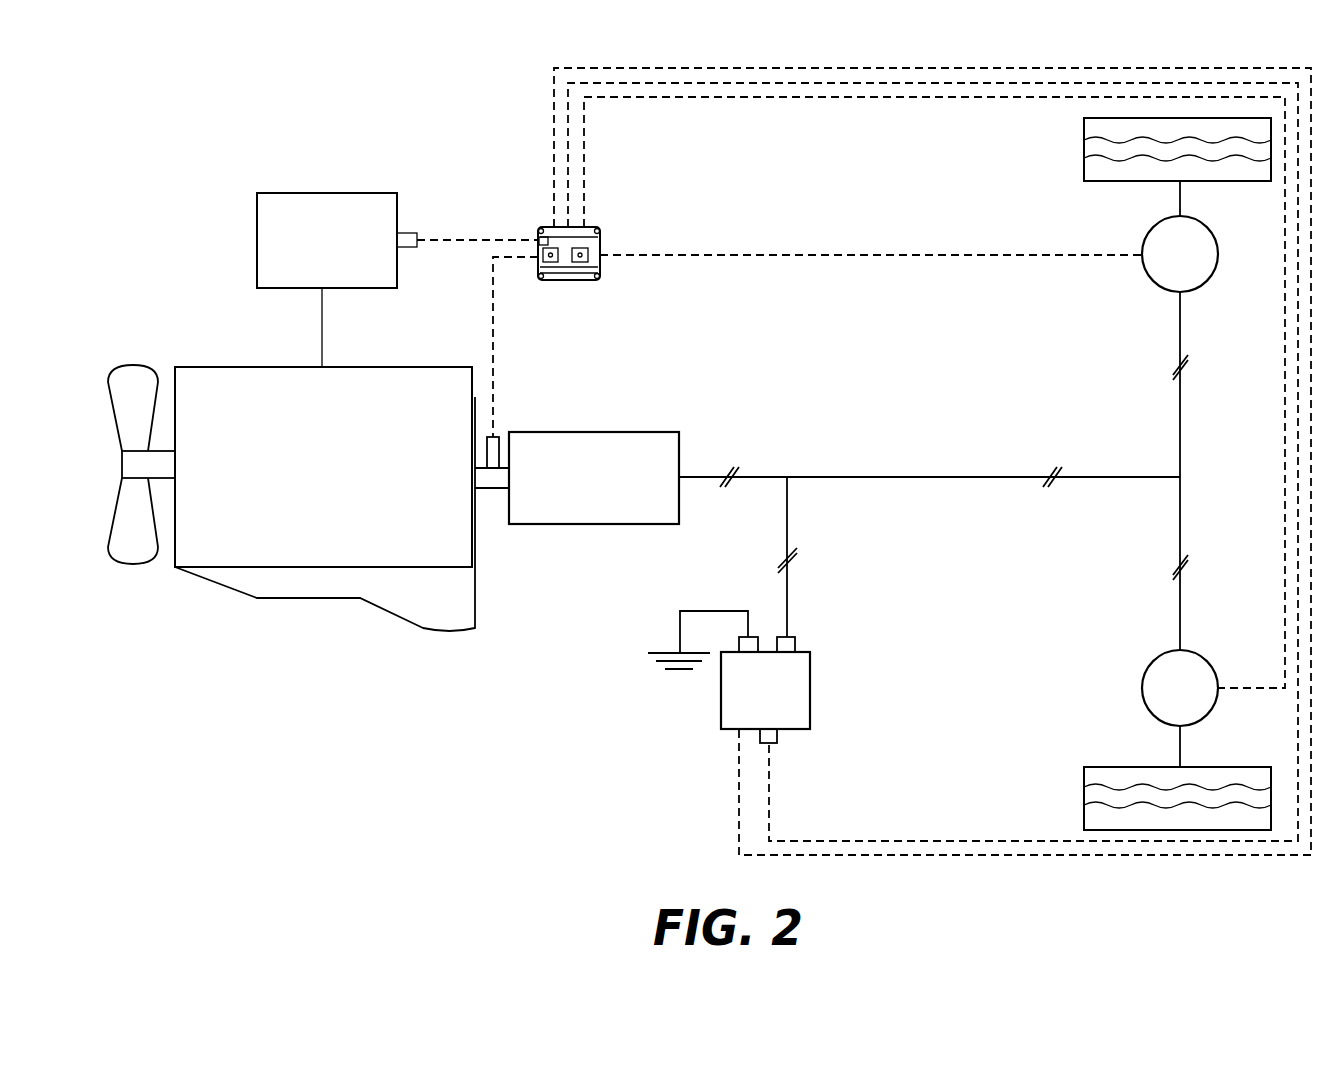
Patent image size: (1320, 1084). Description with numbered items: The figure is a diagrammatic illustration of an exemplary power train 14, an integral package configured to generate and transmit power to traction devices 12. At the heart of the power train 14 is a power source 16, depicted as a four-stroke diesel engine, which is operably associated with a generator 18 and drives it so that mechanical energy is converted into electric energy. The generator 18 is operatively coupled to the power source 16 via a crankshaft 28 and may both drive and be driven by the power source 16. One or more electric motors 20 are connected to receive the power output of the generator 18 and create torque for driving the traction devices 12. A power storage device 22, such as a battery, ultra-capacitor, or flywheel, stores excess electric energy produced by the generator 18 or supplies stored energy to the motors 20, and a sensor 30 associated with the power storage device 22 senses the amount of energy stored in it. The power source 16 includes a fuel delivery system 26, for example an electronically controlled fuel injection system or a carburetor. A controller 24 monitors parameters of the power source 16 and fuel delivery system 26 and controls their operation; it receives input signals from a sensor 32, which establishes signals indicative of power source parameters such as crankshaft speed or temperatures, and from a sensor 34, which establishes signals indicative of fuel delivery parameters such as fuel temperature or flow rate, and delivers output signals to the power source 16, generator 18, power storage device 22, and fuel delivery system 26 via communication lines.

The traction device 12 is at (1095, 182).
The power train 14 is at (226, 163).
The power source 16 is at (333, 517).
The generator 18 is at (609, 491).
The electric motor 20 is at (1196, 267).
The power storage device 22 is at (778, 707).
The controller 24 is at (596, 226).
The fuel delivery system 26 is at (342, 255).
The crankshaft 28 is at (495, 490).
The sensor 30 is at (775, 743).
The sensor 32 is at (499, 440).
The sensor 34 is at (412, 235).